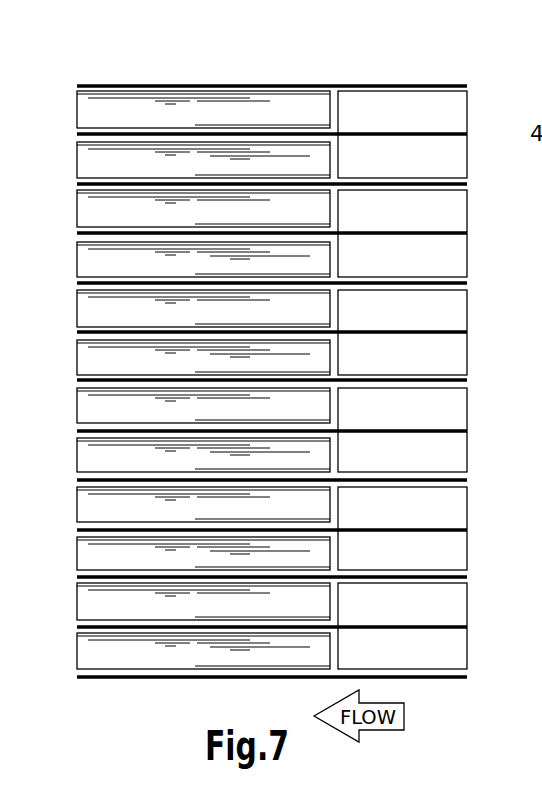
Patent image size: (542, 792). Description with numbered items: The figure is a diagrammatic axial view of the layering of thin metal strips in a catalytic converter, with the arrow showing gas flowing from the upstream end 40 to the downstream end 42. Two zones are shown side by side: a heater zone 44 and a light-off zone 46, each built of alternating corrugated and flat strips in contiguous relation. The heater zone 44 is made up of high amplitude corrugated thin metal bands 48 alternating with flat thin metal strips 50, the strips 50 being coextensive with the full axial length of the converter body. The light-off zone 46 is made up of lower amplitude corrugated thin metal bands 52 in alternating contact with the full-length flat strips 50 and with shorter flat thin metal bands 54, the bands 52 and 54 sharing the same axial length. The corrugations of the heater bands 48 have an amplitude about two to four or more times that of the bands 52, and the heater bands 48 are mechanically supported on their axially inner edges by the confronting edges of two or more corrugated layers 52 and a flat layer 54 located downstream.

The upstream end 40 is at (278, 343).
The downstream end 42 is at (276, 343).
The heater zone 44 is at (339, 63).
The light-off zone 46 is at (74, 63).
The high amplitude corrugated thin metal band 48 is at (431, 138).
The flat thin metal strip 50 is at (466, 88).
The lower amplitude corrugated thin metal band 52 is at (97, 113).
The flat thin metal band 54 is at (78, 136).